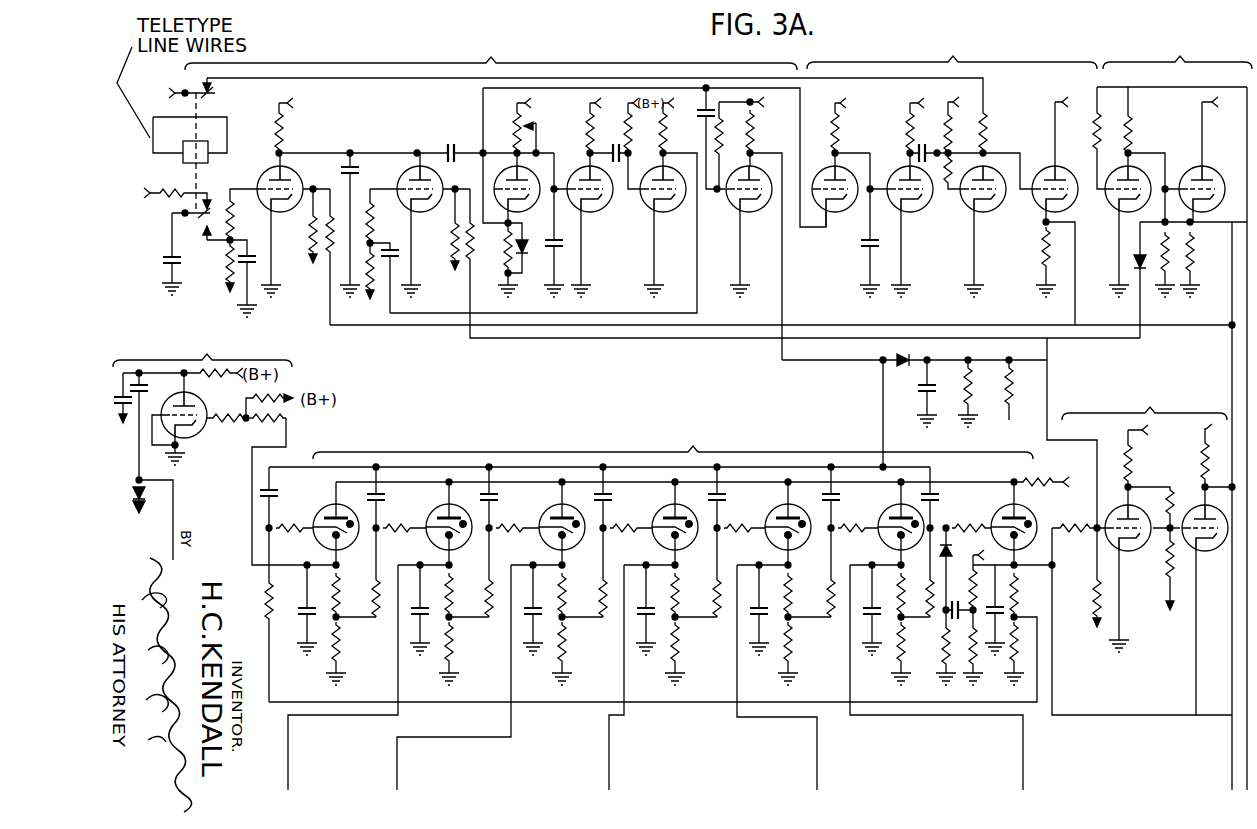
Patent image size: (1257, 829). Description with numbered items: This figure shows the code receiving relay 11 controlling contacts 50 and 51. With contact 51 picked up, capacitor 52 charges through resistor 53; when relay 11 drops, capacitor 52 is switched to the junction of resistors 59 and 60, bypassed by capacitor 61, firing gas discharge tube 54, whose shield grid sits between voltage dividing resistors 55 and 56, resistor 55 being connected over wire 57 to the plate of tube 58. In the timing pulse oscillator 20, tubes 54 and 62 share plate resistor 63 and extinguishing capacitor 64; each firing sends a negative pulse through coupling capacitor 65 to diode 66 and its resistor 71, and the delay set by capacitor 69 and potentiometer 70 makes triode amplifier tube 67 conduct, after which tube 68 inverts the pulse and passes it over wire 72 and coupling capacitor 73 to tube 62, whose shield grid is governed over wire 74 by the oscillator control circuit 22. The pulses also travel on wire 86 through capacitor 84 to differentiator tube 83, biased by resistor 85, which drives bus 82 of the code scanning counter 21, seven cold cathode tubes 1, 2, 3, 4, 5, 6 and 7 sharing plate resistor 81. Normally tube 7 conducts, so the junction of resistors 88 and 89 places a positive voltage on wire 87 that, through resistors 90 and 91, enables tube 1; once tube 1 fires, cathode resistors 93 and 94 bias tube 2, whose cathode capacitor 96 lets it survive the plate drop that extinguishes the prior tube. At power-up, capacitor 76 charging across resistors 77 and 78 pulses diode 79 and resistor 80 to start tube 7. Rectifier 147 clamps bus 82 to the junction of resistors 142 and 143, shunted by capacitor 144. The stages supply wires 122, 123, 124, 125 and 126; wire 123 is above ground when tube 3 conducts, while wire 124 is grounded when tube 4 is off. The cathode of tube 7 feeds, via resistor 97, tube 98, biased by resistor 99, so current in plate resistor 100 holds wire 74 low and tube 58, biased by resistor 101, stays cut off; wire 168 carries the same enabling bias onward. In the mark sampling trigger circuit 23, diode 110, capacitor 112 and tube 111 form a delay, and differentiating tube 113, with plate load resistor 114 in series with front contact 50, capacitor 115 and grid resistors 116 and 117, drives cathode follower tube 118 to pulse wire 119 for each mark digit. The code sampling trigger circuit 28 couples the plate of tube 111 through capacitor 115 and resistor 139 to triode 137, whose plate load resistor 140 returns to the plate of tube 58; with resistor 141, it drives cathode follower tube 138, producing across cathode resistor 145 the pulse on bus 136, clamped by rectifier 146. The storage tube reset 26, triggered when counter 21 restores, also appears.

The cold cathode tube 1 is at (337, 505).
The cold cathode tube 2 is at (450, 505).
The cold cathode tube 3 is at (563, 505).
The cold cathode tube 4 is at (676, 505).
The counter tube stage 5 is at (789, 505).
The counter tube stage 6 is at (897, 506).
The cold cathode tube 7 is at (1030, 507).
The code receiving relay 11 is at (210, 155).
The timing pulse oscillator 20 is at (720, 62).
The code scanning counter 21 is at (843, 449).
The oscillator control circuit 22 is at (1102, 412).
The mark sampling trigger circuit 23 is at (983, 62).
The storage tube reset 26 is at (267, 357).
The code sampling trigger circuit 28 is at (1157, 62).
The front contact 50 is at (210, 96).
The contact 51 is at (191, 224).
The capacitor 52 is at (163, 258).
The resistor 53 is at (162, 190).
The gas discharge tube 54 is at (296, 181).
The voltage dividing resistor 55 is at (331, 256).
The voltage dividing resistor 56 is at (309, 225).
The wire 57 is at (447, 326).
The tube 58 is at (1207, 567).
The resistor 59 is at (236, 214).
The resistor 60 is at (226, 262).
The capacitor 61 is at (256, 258).
The gas discharge tube 62 is at (441, 181).
The common plate resistor 63 is at (284, 124).
The common extinguishing capacitor 64 is at (357, 172).
The coupling capacitor 65 is at (455, 146).
The diode 66 is at (496, 176).
The triode amplifier tube 67 is at (594, 211).
The triode tube 68 is at (660, 211).
The capacitor 69 is at (525, 243).
The potentiometer 70 is at (515, 126).
The resistor 71 is at (503, 262).
The wire 72 is at (698, 283).
The coupling capacitor 73 is at (391, 246).
The wire 74 is at (470, 308).
The capacitor 76 is at (948, 613).
The voltage dividing resistor 77 is at (986, 617).
The voltage dividing resistor 78 is at (955, 647).
The diode 79 is at (949, 554).
The resistor 80 is at (946, 542).
The common plate resistor 81 is at (1056, 471).
The common bus 82 is at (763, 466).
The differentiator tube 83 is at (745, 211).
The capacitor 84 is at (700, 117).
The resistor 85 is at (756, 227).
The wire 86 is at (483, 110).
The wire 87 is at (895, 700).
The resistor 88 is at (1016, 610).
The resistor 89 is at (1011, 657).
The resistor 90 is at (267, 600).
The resistor 91 is at (285, 528).
The cathode resistor 93 is at (340, 590).
The cathode resistor 94 is at (340, 640).
The capacitor 96 is at (424, 604).
The resistor 97 is at (1078, 532).
The tube 98 is at (1137, 511).
The resistor 99 is at (1094, 590).
The plate resistor 100 is at (1133, 452).
The resistor 101 is at (1167, 570).
The diode 110 is at (845, 170).
The triode amplifier tube 111 is at (917, 189).
The capacitor 112 is at (867, 250).
The triode tube 113 is at (978, 212).
The plate load resistor 114 is at (986, 122).
The capacitor 115 is at (921, 150).
The grid resistor 116 is at (964, 124).
The grid resistor 117 is at (964, 167).
The cathode follower tube 118 is at (1071, 170).
The wire 119 is at (1077, 290).
The output conductor 122 is at (288, 783).
The wire 123 is at (397, 779).
The wire 124 is at (609, 779).
The output conductor 125 is at (817, 779).
The output conductor 126 is at (1024, 779).
The bus 136 is at (1245, 677).
The triode amplifier tube 137 is at (1107, 195).
The cathode follower tube 138 is at (1202, 168).
The resistor 139 is at (1100, 105).
The plate load resistor 140 is at (1133, 122).
The resistor 141 is at (1178, 261).
The voltage dividing resistor 142 is at (1007, 384).
The voltage dividing resistor 143 is at (968, 385).
The capacitor 144 is at (923, 390).
The cathode resistor 145 is at (1195, 240).
The rectifier 146 is at (1138, 260).
The rectifier 147 is at (898, 357).
The wire 168 is at (1130, 719).